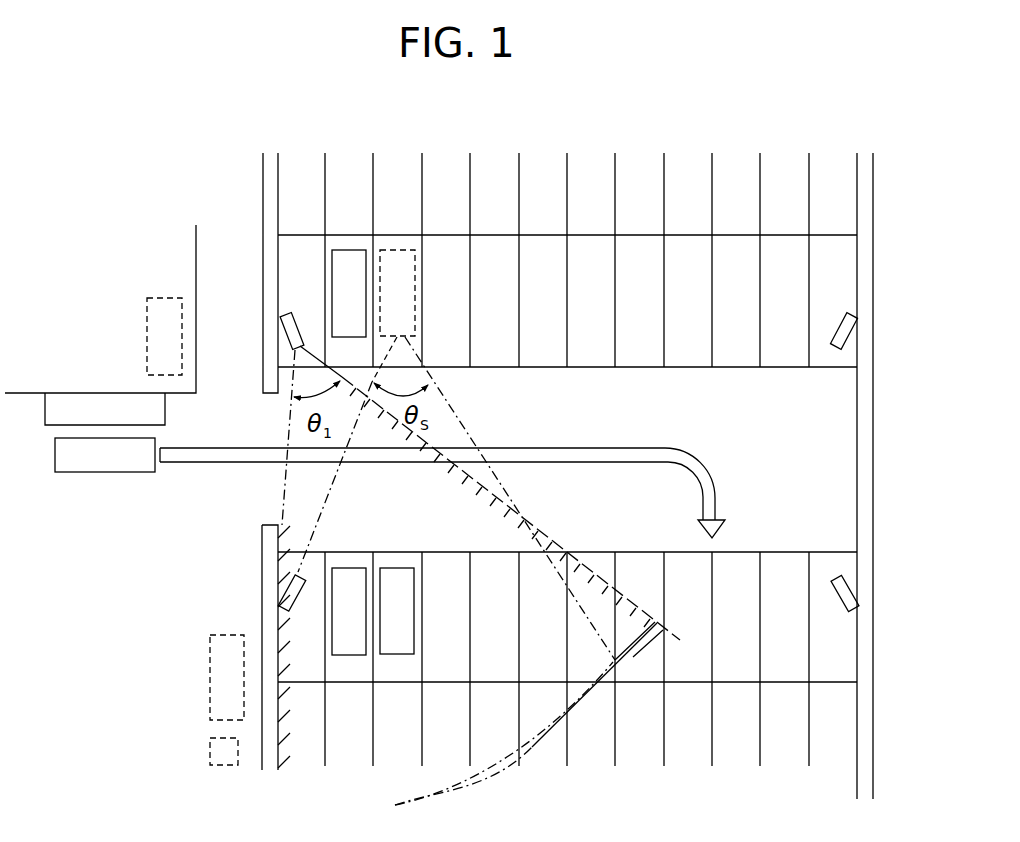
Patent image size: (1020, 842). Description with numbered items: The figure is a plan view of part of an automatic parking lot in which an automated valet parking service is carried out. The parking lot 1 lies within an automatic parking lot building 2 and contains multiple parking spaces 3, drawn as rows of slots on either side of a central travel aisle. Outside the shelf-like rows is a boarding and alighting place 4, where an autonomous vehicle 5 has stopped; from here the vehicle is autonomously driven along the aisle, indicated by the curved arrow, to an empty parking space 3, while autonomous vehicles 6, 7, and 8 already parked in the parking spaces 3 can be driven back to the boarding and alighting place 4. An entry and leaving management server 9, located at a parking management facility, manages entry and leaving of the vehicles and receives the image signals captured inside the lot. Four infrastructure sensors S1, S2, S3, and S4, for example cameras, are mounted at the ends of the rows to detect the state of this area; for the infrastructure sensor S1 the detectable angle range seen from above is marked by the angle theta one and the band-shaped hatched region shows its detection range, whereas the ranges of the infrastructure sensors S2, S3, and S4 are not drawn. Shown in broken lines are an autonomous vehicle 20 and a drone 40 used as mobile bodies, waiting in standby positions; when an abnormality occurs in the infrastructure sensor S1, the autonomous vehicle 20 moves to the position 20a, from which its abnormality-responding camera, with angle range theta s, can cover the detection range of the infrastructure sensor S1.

The parking lot 1 is at (581, 428).
The automatic parking lot building 2 is at (879, 182).
The parking spaces 3 is at (595, 355).
The boarding and alighting place 4 is at (97, 410).
The autonomous vehicle 5 is at (100, 472).
The autonomous vehicle 6 is at (349, 250).
The autonomous vehicle 7 is at (352, 655).
The autonomous vehicle 8 is at (400, 654).
The entry and leaving management server 9 is at (166, 296).
The autonomous vehicle 20 is at (208, 678).
The position of autonomous vehicle 20a is at (398, 250).
The drone 40 is at (208, 755).
The infrastructure sensor S1 is at (285, 330).
The infrastructure sensor S2 is at (283, 593).
The infrastructure sensor S3 is at (855, 323).
The infrastructure sensor S4 is at (855, 595).